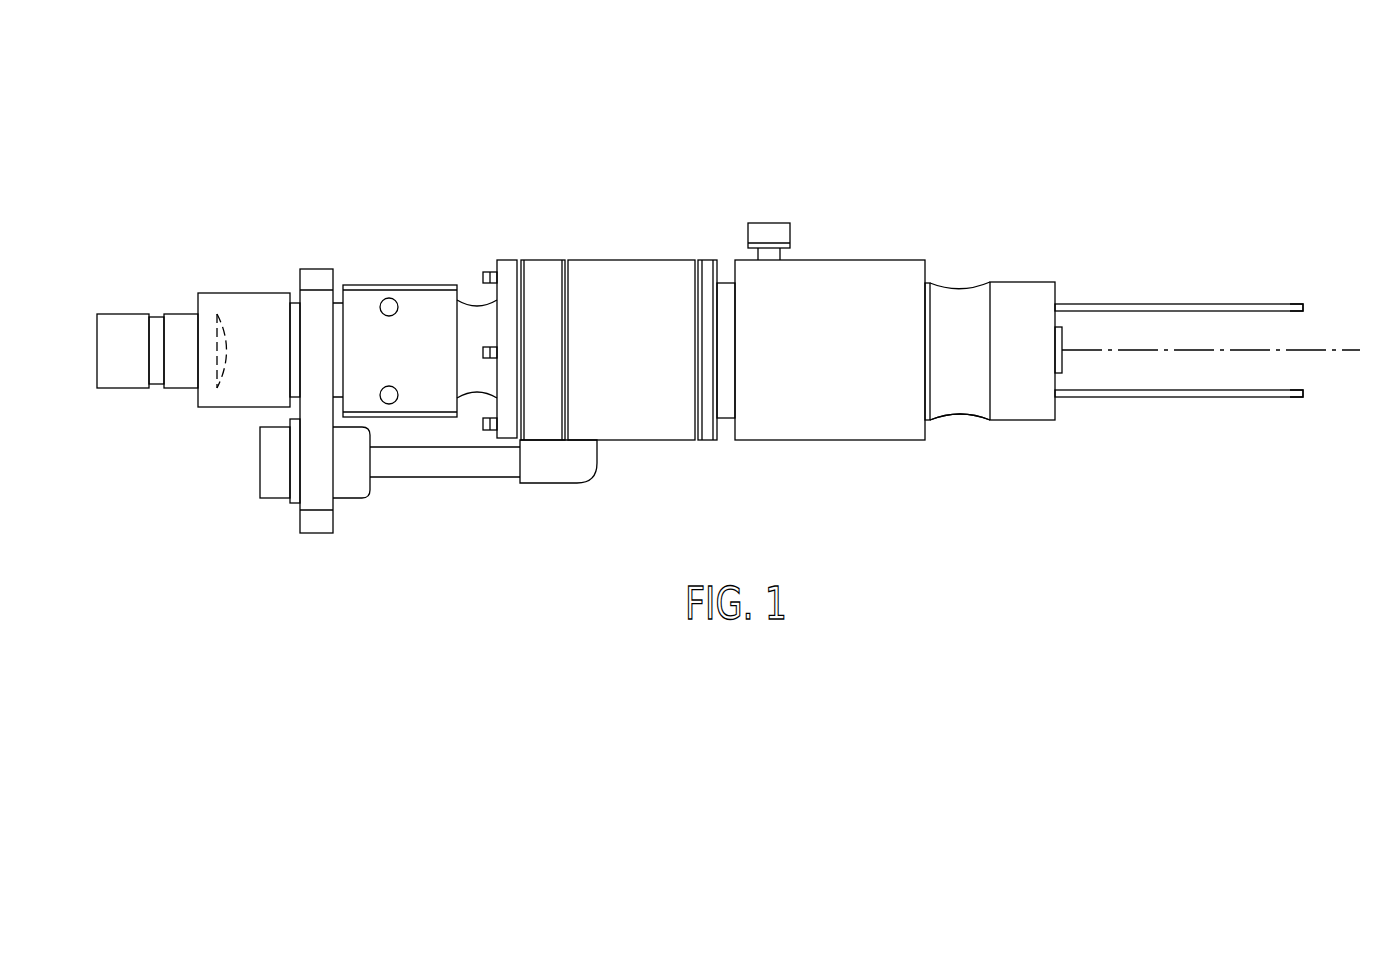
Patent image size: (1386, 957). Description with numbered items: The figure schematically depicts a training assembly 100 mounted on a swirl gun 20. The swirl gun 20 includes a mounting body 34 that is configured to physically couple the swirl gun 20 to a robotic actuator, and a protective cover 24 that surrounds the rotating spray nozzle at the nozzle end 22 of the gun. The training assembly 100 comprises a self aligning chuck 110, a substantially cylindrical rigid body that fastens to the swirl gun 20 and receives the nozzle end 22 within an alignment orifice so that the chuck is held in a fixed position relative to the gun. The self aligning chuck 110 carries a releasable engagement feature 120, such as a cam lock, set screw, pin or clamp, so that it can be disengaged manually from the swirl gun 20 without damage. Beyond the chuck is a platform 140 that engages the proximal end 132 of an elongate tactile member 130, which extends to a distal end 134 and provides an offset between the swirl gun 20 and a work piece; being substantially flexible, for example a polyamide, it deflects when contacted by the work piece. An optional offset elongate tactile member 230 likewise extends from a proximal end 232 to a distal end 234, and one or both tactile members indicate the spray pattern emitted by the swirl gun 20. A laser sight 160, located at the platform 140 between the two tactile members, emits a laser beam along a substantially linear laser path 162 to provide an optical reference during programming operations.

The training assembly 100 is at (737, 301).
The swirl gun 20 is at (611, 272).
The nozzle end 22 is at (711, 314).
The protective cover 24 is at (723, 421).
The mounting body 34 is at (433, 298).
The self aligning chuck 110 is at (830, 407).
The releasable engagement feature 120 is at (768, 222).
The elongate tactile member 130 is at (1203, 250).
The proximal end 132 is at (961, 295).
The distal end 134 is at (1320, 250).
The platform 140 is at (1009, 290).
The laser sight 160 is at (1063, 337).
The laser path 162 is at (1345, 350).
The offset elongate tactile member 230 is at (1204, 453).
The proximal end 232 is at (964, 473).
The distal end 234 is at (1321, 453).